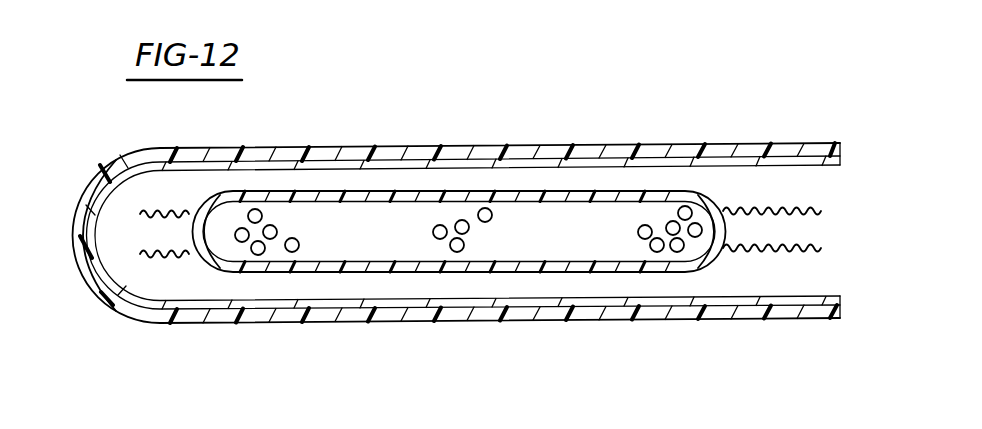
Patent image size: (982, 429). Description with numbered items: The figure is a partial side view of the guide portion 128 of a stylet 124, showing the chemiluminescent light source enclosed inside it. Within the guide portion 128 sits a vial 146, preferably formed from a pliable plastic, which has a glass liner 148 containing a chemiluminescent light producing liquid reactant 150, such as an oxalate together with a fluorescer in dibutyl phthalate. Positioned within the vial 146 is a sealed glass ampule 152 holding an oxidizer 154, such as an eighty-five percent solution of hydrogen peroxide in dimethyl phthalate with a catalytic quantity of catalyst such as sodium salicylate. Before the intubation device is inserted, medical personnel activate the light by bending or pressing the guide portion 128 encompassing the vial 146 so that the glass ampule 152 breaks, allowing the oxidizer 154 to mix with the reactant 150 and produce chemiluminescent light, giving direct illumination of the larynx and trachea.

The stylet 124 is at (718, 124).
The guide portion 128 is at (424, 147).
The vial 146 is at (108, 170).
The glass liner 148 is at (551, 300).
The chemiluminescent light producing liquid reactant 150 is at (286, 230).
The sealed glass ampule 152 is at (265, 270).
The oxidizer 154 is at (727, 203).